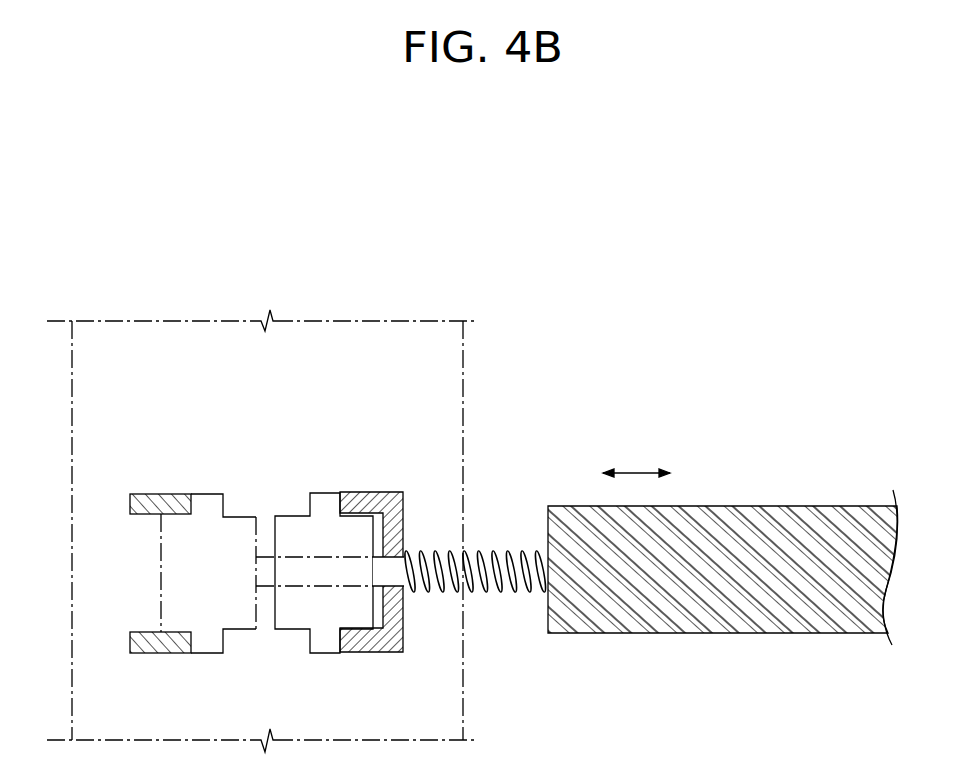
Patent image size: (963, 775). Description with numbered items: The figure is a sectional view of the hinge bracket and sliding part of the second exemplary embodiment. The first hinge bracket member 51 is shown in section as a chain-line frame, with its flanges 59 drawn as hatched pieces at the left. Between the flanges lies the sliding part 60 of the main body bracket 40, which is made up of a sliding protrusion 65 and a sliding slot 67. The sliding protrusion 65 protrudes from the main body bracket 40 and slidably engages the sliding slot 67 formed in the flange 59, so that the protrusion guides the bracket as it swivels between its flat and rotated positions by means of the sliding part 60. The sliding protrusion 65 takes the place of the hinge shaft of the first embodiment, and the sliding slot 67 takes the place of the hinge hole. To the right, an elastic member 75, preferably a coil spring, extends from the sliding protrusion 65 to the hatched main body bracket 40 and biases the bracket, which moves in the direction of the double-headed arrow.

The main body bracket 40 is at (731, 506).
The first hinge bracket member 51 is at (352, 322).
The flange 59 is at (155, 503).
The sliding part 60 is at (328, 426).
The sliding protrusion 65 is at (322, 500).
The sliding slot 67 is at (238, 500).
The elastic member 75 is at (444, 548).